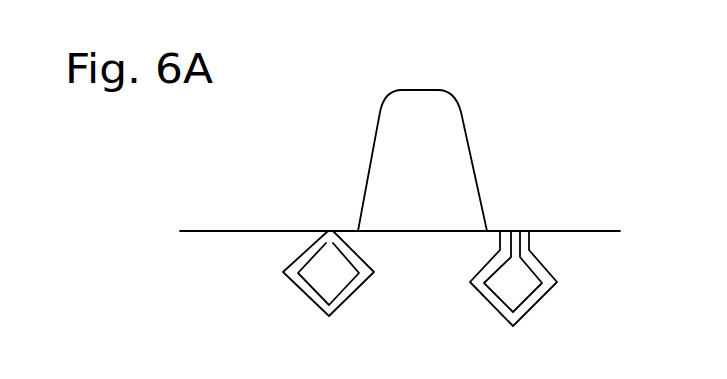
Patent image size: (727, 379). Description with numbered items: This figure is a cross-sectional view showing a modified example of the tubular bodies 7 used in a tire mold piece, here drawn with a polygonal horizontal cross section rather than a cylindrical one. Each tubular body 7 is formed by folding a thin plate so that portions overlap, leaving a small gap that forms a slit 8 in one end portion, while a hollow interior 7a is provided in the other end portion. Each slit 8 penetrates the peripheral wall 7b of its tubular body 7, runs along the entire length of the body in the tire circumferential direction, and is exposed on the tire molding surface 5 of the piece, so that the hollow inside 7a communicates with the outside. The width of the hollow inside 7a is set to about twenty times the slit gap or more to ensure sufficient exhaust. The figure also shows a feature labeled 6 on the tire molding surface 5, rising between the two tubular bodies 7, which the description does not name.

The tire molding surface 5 is at (258, 231).
The bump 6 is at (389, 138).
The tubular body 7 is at (409, 303).
The hollow interior 7a is at (327, 288).
The peripheral wall 7b is at (296, 282).
The slit 8 is at (330, 231).